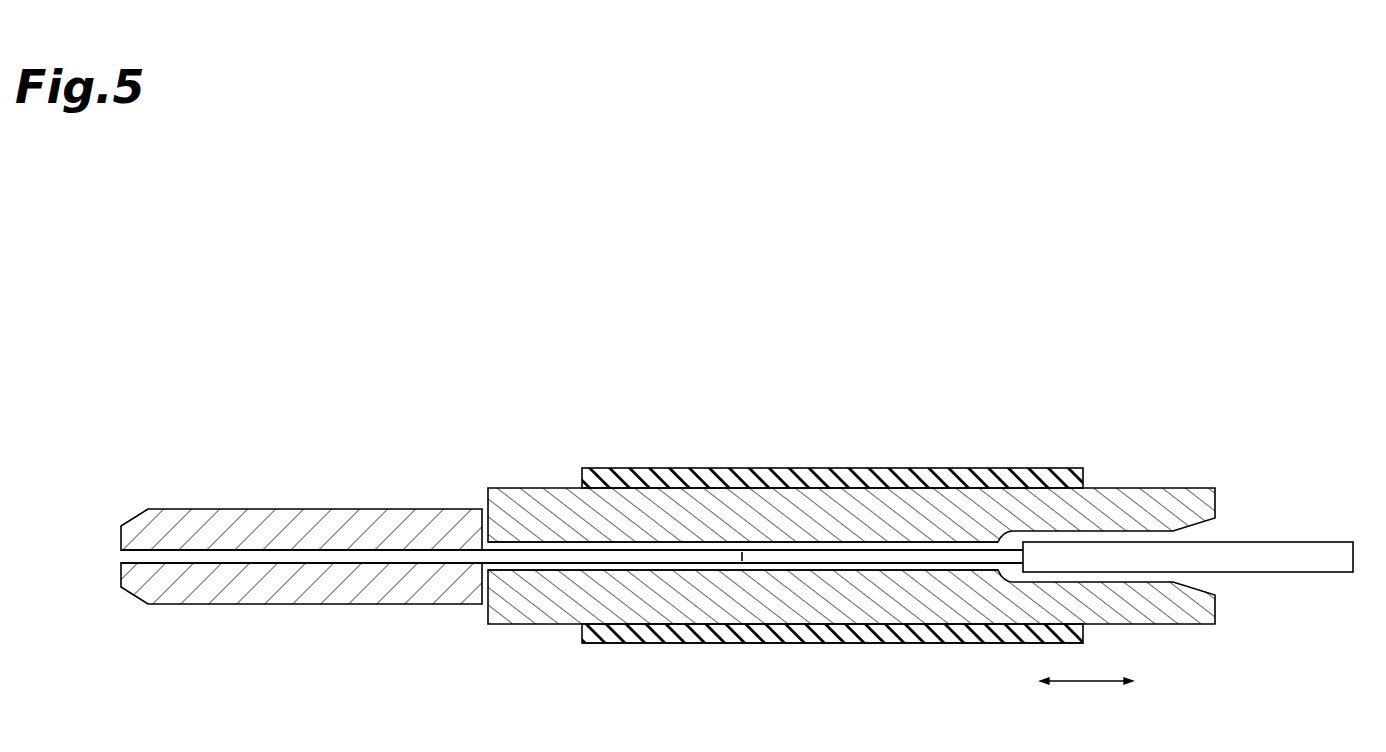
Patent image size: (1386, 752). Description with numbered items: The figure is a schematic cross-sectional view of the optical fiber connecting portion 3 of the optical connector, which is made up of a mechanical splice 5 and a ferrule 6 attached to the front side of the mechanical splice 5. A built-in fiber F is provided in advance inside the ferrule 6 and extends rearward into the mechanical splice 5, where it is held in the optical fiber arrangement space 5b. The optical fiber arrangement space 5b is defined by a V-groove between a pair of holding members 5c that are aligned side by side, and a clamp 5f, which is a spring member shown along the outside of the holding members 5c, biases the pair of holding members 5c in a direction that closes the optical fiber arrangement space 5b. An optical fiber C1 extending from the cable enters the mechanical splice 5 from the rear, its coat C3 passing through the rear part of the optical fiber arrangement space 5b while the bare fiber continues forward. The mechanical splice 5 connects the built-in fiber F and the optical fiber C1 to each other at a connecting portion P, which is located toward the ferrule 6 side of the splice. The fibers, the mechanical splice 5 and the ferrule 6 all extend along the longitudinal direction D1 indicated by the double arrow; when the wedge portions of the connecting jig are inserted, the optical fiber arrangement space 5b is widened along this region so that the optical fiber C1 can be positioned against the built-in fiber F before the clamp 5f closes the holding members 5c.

The optical fiber connecting portion 3 is at (1215, 382).
The mechanical splice 5 is at (1090, 448).
The optical fiber arrangement space 5b is at (795, 555).
The holding members 5c is at (632, 525).
The clamp 5f is at (899, 637).
The ferrule 6 is at (273, 520).
The built-in fiber F is at (529, 552).
The optical fiber C1 is at (861, 553).
The coat C3 is at (1052, 555).
The connecting portion P is at (742, 553).
The longitudinal direction D1 is at (1086, 697).